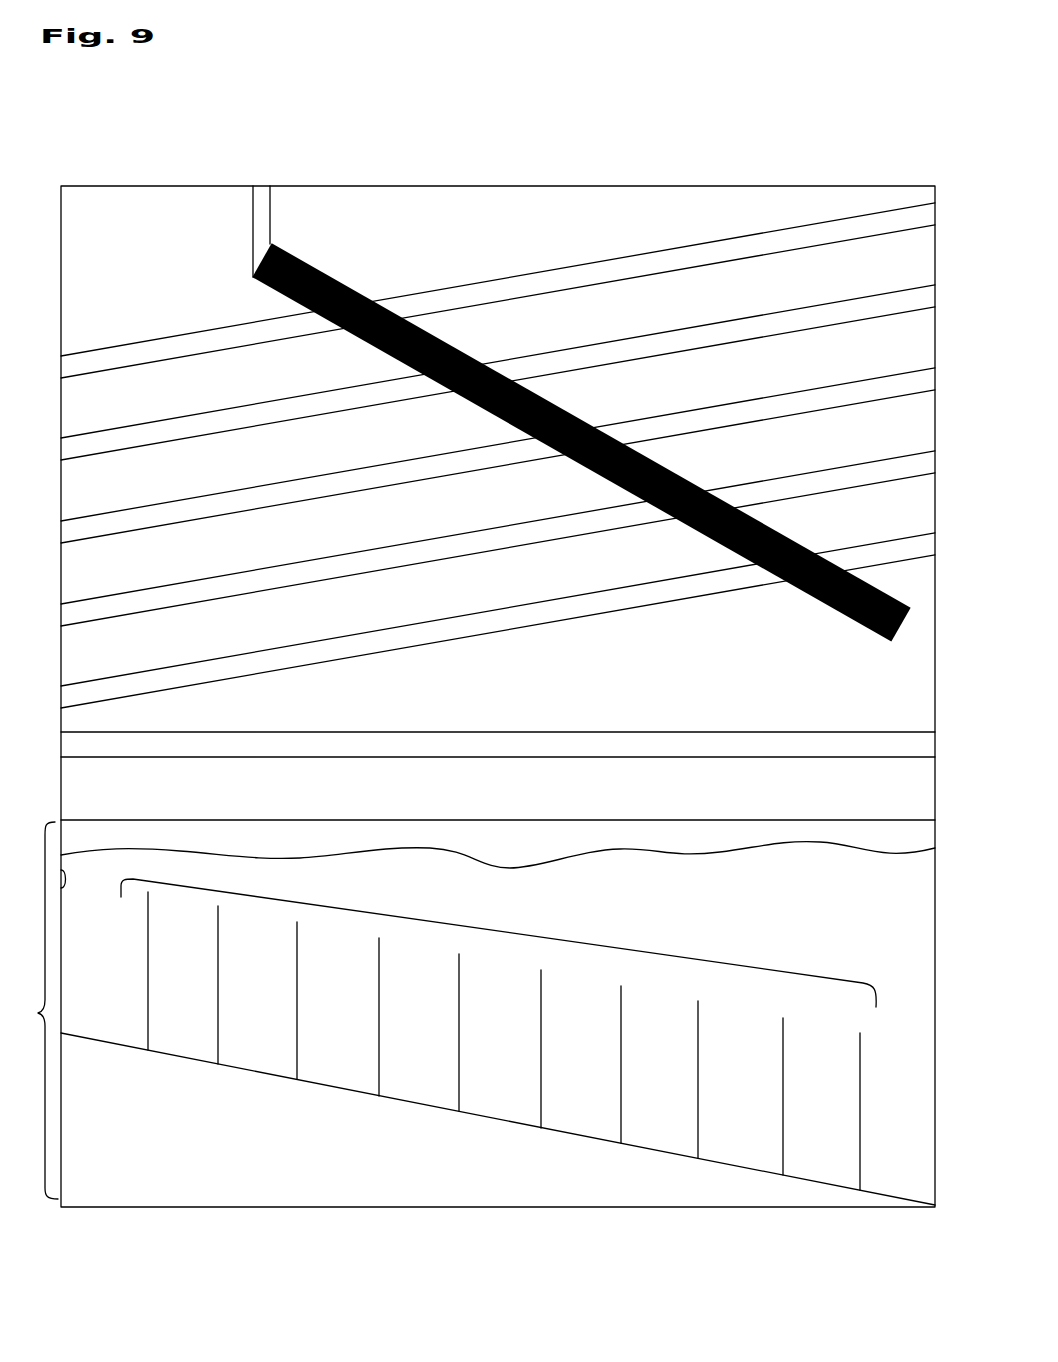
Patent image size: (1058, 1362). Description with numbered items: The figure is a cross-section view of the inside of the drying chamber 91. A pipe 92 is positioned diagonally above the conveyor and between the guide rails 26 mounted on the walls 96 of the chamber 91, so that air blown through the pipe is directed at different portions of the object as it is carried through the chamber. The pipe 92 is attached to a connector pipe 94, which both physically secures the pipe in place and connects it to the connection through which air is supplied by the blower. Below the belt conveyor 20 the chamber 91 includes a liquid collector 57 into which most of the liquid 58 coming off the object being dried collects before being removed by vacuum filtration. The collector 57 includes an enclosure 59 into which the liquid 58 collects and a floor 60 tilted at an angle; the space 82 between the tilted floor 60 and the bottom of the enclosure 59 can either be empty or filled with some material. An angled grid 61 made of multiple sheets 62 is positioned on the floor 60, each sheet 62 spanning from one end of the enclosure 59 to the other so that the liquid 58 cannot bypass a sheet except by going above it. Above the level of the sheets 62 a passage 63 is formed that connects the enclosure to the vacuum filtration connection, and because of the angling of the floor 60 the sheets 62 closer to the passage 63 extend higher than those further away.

The drying chamber 91 is at (105, 90).
The walls 96 is at (202, 319).
The belt conveyor 20 is at (222, 732).
The enclosure 59 is at (128, 819).
The guide rails 26 is at (513, 272).
The connector pipe 94 is at (273, 214).
The pipe 92 is at (896, 637).
The liquid collector 57 is at (35, 1010).
The liquid 58 is at (493, 868).
The passage 63 is at (65, 886).
The angled grid 61 is at (490, 932).
The sheets 62 is at (147, 935).
The floor 60 is at (97, 1040).
The space 82 is at (240, 1152).